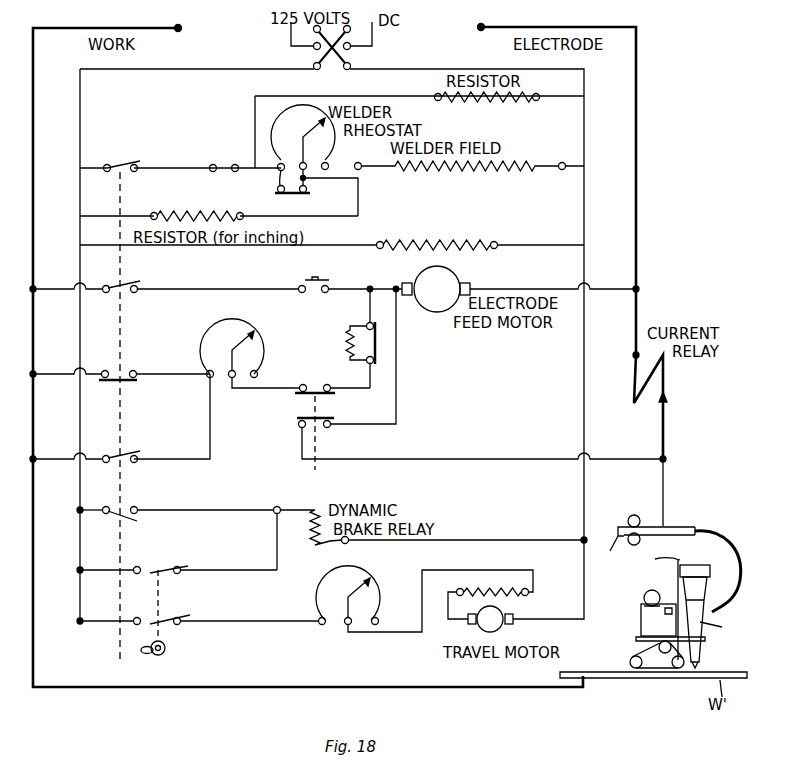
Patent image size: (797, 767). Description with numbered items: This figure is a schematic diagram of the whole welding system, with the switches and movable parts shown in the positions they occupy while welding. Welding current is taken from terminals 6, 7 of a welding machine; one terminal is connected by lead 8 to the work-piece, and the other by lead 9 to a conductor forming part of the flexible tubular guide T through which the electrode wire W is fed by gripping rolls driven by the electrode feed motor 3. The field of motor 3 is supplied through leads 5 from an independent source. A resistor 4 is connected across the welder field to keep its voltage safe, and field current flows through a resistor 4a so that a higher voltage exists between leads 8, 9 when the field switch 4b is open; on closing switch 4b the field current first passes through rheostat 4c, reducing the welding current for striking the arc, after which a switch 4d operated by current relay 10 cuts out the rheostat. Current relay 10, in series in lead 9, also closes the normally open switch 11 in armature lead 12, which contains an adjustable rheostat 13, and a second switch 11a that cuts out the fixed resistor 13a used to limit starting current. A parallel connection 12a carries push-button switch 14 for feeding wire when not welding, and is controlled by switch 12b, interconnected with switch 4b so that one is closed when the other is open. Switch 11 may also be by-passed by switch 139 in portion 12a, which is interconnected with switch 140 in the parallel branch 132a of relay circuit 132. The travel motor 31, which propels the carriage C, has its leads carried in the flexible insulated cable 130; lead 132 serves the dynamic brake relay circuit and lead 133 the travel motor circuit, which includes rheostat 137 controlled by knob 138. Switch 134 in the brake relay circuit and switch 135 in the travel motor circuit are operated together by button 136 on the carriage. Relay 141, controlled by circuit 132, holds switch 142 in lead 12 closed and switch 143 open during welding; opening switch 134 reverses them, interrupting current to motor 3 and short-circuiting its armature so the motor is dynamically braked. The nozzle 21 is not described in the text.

The electrode feed motor 3 is at (405, 279).
The resistor 4 is at (488, 102).
The resistor 4a is at (166, 212).
The field switch 4b is at (128, 166).
The rheostat 4c is at (273, 136).
The switch 4d is at (278, 181).
The leads 5 is at (238, 251).
The terminal 6 is at (179, 30).
The terminal 7 is at (478, 30).
The lead 8 is at (33, 118).
The lead 9 is at (638, 144).
The current relay 10 is at (633, 376).
The switch 11 is at (118, 369).
The switch 11a is at (379, 346).
The armature lead 12 is at (370, 297).
The parallel connection 12a is at (253, 291).
The switch 12b is at (125, 293).
The adjustable rheostat 13 is at (203, 345).
The fixed resistor 13a is at (347, 343).
The push-button switch 14 is at (305, 280).
The welding nozzle 21 is at (706, 579).
The travel motor 31 is at (644, 597).
The flexible insulated cable 130 is at (723, 626).
The lead 132 is at (523, 539).
The parallel branch 132a is at (200, 508).
The lead 133 is at (229, 624).
The switch 134 is at (165, 568).
The switch 135 is at (166, 618).
The button or lever 136 is at (140, 650).
The rheostat 137 is at (316, 598).
The rotatable knob 138 is at (344, 624).
The switch 139 is at (124, 456).
The switch 140 is at (127, 522).
The relay 141 is at (313, 508).
The switch 142 is at (305, 396).
The switch 143 is at (332, 419).
The flexible tubular guide T is at (700, 529).
The wire W is at (715, 660).
The carriage C is at (646, 648).